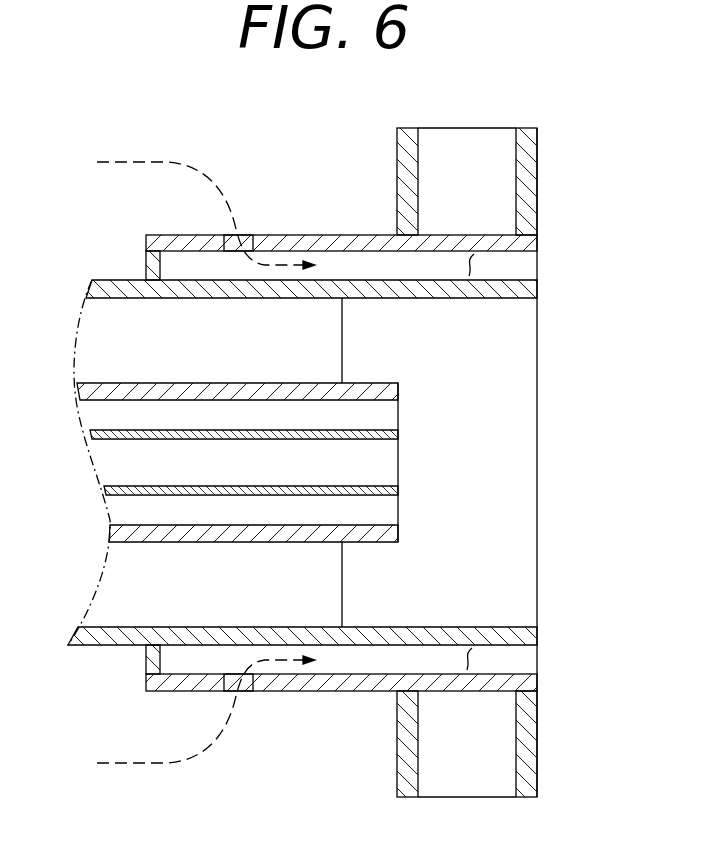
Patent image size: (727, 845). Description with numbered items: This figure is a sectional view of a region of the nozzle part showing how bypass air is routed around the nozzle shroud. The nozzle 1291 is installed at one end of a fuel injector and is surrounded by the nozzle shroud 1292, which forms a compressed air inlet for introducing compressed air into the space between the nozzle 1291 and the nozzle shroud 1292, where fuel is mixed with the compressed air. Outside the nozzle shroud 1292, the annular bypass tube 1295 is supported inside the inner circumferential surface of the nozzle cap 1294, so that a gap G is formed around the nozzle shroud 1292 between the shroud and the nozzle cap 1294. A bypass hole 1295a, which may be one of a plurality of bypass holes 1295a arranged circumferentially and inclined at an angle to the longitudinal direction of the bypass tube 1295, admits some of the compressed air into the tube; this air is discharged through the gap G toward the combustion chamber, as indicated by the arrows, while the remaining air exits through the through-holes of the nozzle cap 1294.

The nozzle 1291 is at (422, 460).
The nozzle shroud 1292 is at (118, 637).
The nozzle cap 1294 is at (527, 188).
The annular bypass tube 1295 is at (178, 242).
The bypass hole 1295a is at (247, 244).
The gap G is at (470, 263).